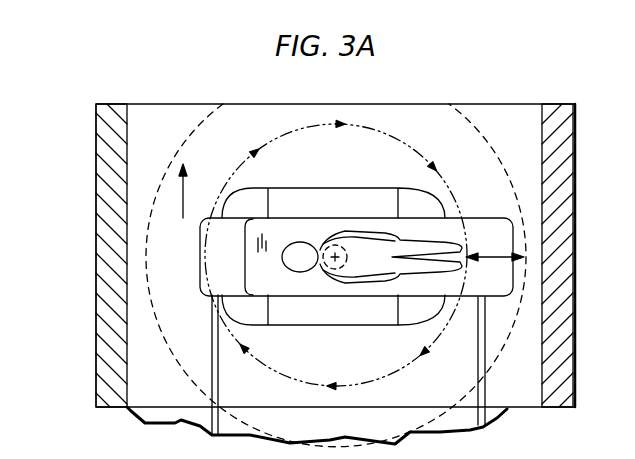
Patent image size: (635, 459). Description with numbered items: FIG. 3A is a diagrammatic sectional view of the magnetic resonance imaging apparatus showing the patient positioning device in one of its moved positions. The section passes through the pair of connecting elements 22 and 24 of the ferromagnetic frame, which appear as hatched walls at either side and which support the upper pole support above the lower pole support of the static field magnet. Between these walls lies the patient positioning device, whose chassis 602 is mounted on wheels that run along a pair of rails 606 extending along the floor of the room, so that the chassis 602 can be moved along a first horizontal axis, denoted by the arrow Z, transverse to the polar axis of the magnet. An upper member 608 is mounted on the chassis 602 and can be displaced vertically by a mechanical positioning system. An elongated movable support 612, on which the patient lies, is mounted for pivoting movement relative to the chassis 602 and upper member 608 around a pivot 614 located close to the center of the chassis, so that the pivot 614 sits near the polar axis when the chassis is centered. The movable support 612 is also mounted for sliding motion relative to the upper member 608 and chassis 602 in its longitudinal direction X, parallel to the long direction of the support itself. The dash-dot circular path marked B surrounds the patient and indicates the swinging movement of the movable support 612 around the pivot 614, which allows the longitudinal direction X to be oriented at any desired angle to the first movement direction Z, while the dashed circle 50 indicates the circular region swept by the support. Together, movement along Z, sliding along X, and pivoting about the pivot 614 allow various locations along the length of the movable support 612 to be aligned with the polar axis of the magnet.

The connecting element 22 is at (96, 350).
The connecting element 24 is at (575, 152).
The circular path of radiation source 50 is at (482, 128).
The chassis 602 is at (200, 265).
The rails 606 is at (212, 378).
The upper member 608 is at (215, 240).
The movable support 612 is at (260, 268).
The pivot 614 is at (320, 244).
The circular beam trajectory B is at (387, 133).
The first movement direction Z is at (185, 200).
The longitudinal direction X is at (490, 255).